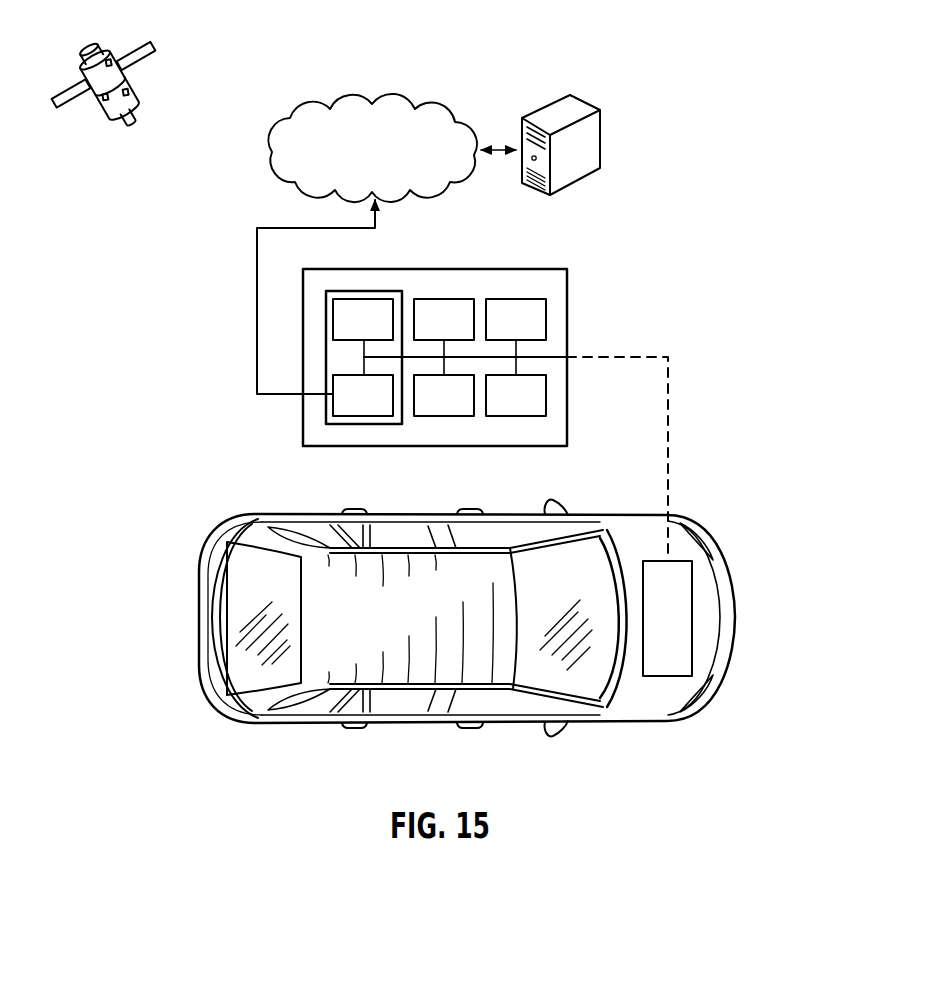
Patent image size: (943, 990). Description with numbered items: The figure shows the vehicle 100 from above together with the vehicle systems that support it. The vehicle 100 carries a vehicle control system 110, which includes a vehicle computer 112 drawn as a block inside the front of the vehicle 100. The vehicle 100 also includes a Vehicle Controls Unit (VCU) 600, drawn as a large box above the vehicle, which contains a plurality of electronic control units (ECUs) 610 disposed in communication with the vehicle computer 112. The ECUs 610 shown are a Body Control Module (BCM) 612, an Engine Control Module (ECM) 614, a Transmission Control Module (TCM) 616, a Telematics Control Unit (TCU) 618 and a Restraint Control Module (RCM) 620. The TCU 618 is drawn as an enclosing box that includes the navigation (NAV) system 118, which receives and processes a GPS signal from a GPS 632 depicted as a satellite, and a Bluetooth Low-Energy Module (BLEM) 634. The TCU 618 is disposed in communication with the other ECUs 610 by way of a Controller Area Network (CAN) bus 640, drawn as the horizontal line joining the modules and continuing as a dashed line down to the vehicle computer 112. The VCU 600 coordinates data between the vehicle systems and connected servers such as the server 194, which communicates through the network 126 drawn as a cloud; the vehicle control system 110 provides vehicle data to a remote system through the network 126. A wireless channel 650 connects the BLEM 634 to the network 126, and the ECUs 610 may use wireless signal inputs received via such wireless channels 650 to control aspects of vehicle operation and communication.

The vehicle 100 is at (463, 642).
The vehicle control system 110 is at (666, 695).
The vehicle computer 112 is at (692, 618).
The network 126 is at (395, 164).
The server 194 is at (618, 90).
The Vehicle Controls Unit 600 is at (497, 269).
The electronic control units 610 is at (484, 314).
The Telematics Control Unit 618 is at (387, 291).
The navigation system 118 is at (384, 335).
The Bluetooth Low-Energy Module 634 is at (384, 411).
The Body Control Module 612 is at (465, 335).
The Engine Control Module 614 is at (537, 335).
The Transmission Control Module 616 is at (465, 411).
The Restraint Control Module 620 is at (537, 411).
The Controller Area Network bus 640 is at (541, 357).
The wireless channel 650 is at (257, 315).
The GPS 632 is at (163, 47).